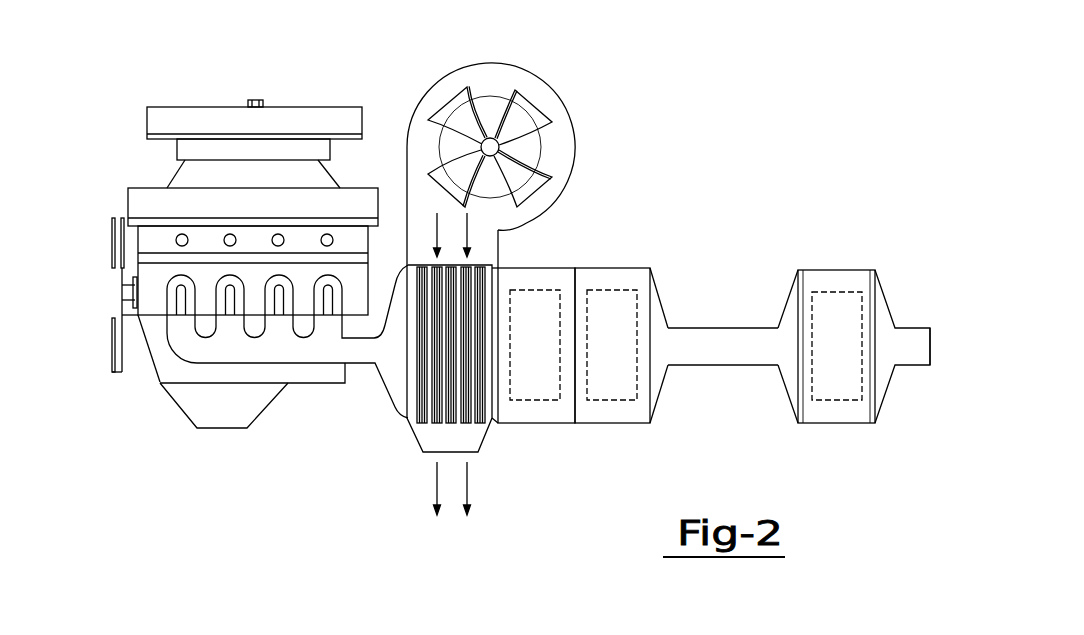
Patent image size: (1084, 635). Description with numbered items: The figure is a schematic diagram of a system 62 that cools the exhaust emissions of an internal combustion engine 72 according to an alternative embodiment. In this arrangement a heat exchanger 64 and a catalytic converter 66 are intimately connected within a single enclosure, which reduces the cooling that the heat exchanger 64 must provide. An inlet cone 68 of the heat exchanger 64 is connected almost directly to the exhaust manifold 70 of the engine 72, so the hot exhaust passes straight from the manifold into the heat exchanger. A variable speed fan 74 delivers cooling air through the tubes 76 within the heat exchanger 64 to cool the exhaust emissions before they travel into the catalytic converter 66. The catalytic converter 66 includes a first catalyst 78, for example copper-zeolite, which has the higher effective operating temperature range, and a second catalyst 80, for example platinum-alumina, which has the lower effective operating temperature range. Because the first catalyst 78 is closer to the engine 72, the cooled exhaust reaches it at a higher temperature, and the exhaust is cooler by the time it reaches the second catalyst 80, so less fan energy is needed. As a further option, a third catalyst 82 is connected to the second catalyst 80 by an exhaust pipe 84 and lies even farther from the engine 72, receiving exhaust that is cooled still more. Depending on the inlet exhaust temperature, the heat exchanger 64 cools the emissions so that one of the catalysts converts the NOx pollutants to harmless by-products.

The system 62 is at (688, 106).
The heat exchanger 64 is at (498, 432).
The catalytic converter 66 is at (575, 432).
The inlet cone 68 is at (383, 390).
The exhaust manifold 70 is at (170, 345).
The internal combustion engine 72 is at (128, 188).
The variable speed fan 74 is at (558, 93).
The tubes 76 is at (498, 250).
The first catalyst 78 is at (548, 290).
The second catalyst 80 is at (615, 290).
The third catalyst 82 is at (842, 292).
The exhaust pipe 84 is at (692, 328).